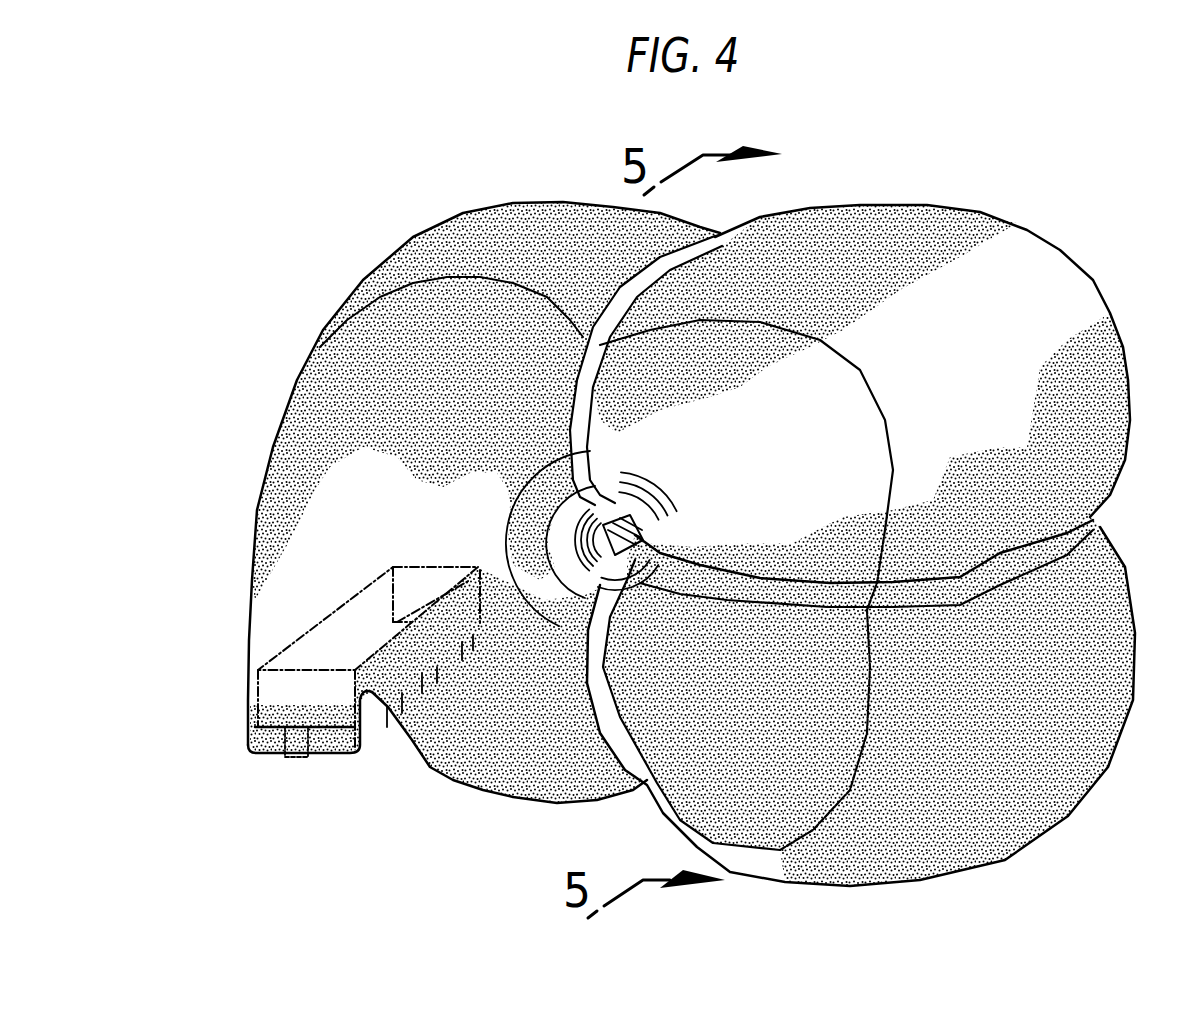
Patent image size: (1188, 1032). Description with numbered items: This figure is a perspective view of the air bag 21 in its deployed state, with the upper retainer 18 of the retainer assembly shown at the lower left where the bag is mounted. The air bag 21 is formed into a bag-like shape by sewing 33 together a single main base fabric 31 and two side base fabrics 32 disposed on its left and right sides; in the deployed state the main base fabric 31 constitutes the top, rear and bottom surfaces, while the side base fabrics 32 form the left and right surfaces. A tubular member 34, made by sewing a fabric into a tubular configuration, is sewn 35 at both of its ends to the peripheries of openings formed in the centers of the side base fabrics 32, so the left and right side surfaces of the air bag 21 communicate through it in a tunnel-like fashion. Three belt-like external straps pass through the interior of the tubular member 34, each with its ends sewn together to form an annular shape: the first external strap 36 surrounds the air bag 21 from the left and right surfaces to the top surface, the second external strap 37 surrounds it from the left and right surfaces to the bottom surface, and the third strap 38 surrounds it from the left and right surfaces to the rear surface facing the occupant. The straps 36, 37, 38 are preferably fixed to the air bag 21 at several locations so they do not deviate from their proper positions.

The upper retainer 18 is at (303, 632).
The air bag 21 is at (292, 300).
The main base fabric 31 is at (1083, 317).
The side base fabric 32 is at (840, 393).
The sewing 33 is at (890, 438).
The tubular member 34 is at (563, 497).
The sewing 35 is at (567, 553).
The first external strap 36 is at (567, 390).
The second external strap 37 is at (600, 690).
The third strap 38 is at (783, 590).